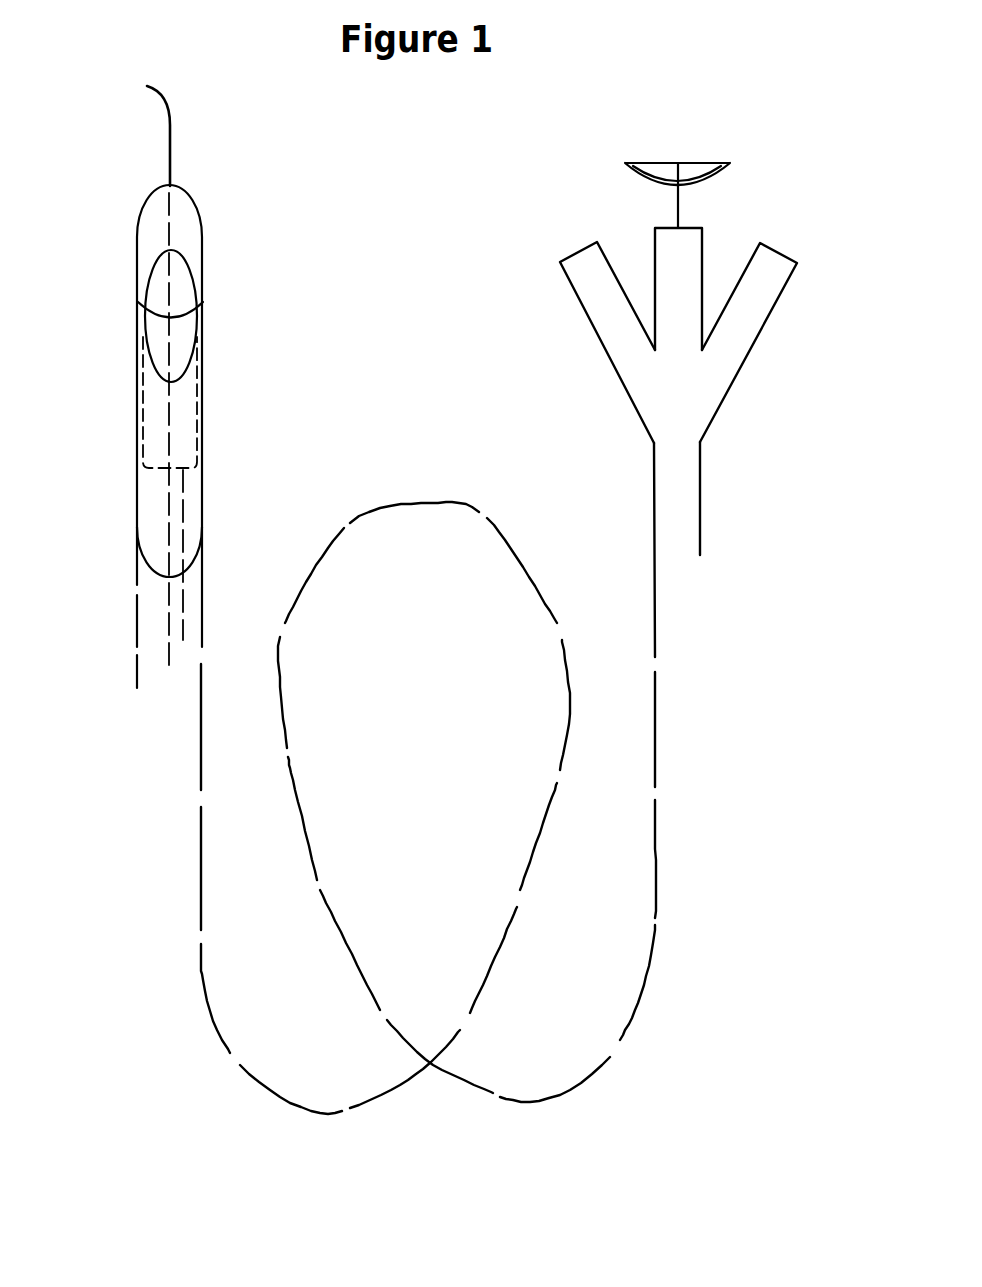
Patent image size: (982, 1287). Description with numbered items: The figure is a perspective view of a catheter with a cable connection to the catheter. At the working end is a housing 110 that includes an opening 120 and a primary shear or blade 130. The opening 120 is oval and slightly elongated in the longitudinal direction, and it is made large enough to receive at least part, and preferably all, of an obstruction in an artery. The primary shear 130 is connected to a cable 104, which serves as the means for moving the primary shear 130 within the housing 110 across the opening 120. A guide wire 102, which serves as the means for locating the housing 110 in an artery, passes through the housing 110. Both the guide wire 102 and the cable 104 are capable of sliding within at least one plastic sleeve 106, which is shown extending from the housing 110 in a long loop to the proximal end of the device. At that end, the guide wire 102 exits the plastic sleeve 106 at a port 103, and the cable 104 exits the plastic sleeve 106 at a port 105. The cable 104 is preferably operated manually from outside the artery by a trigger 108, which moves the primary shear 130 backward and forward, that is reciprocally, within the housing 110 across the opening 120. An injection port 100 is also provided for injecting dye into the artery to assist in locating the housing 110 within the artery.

The injection port 100 is at (755, 345).
The guide wire 102 is at (170, 155).
The port 103 is at (703, 255).
The cable 104 is at (673, 203).
The port 105 is at (573, 297).
The plastic sleeve 106 is at (702, 523).
The trigger 108 is at (693, 163).
The housing 110 is at (207, 272).
The opening 120 is at (183, 293).
The primary shear 130 is at (160, 313).